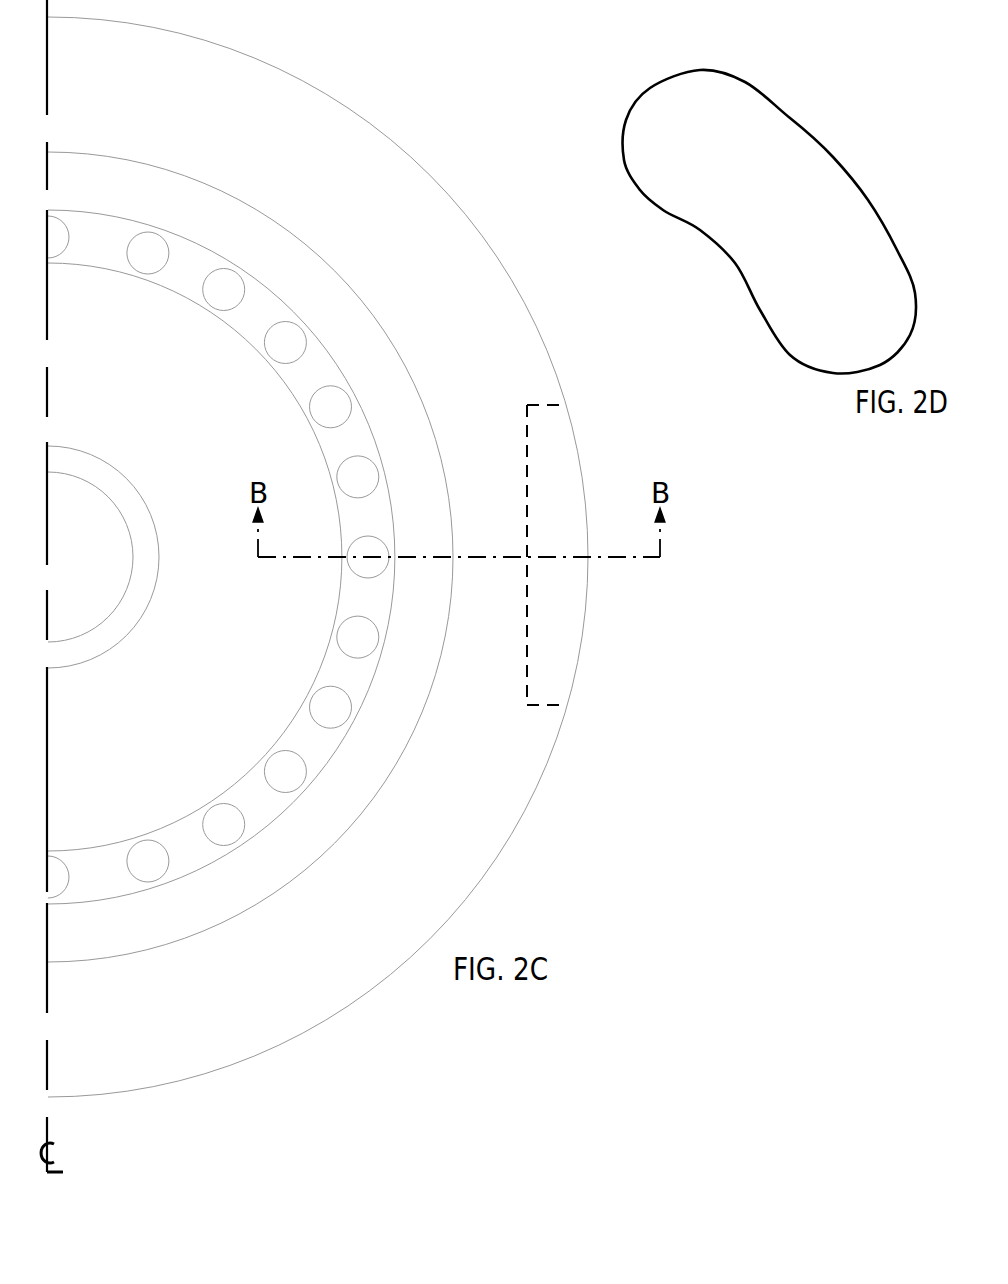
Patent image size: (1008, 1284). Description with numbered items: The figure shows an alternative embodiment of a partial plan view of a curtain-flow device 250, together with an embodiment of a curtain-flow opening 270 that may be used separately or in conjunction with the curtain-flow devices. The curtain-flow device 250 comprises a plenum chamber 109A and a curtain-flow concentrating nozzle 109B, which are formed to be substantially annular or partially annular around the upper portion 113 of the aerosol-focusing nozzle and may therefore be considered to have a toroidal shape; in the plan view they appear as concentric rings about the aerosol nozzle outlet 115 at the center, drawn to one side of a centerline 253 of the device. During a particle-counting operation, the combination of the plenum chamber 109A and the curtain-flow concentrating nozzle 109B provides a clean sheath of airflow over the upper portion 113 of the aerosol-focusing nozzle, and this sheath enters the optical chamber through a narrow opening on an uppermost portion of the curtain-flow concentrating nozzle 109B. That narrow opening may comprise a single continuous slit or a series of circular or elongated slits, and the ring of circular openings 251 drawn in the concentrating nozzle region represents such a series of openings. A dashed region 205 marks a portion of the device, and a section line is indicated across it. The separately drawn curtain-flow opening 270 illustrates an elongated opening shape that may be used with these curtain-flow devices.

In FIG. 2C, the curtain-flow device 250 is at (446, 80).
In FIG. 2D, the curtain-flow opening 270 is at (785, 70).
In FIG. 2C, the plenum chamber 109A is at (325, 127).
In FIG. 2C, the curtain-flow concentrating nozzle 109B is at (380, 372).
In FIG. 2C, the upper portion 113 is at (212, 714).
In FIG. 2C, the aerosol nozzle outlet 115 is at (80, 518).
In FIG. 2C, the holes 251 is at (149, 250).
In FIG. 2C, the centerline 253 is at (48, 1052).
In FIG. 2C, the section region 205 is at (602, 467).